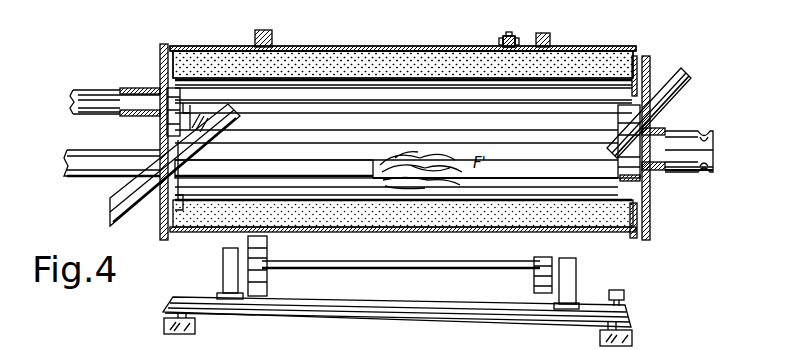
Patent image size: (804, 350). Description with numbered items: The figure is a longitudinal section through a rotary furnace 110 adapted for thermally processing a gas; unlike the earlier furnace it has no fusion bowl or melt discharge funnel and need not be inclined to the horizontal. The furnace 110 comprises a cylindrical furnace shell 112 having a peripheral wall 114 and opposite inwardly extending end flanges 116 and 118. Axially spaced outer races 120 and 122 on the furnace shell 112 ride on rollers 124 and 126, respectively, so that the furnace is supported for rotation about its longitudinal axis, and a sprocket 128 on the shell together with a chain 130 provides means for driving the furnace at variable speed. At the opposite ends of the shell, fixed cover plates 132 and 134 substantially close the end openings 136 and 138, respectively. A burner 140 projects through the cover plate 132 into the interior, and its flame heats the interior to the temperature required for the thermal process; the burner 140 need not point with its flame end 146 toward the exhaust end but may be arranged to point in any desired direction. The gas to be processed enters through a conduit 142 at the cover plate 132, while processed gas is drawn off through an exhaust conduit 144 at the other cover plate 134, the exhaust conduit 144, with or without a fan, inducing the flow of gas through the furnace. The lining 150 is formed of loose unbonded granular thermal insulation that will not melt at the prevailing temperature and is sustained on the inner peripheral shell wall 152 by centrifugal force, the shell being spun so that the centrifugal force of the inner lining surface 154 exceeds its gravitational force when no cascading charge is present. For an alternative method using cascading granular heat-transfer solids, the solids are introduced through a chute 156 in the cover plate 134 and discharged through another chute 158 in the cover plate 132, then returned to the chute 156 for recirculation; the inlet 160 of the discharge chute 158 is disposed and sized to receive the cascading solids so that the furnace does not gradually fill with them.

The furnace 110 is at (391, 41).
The cylindrical furnace shell 112 is at (460, 46).
The peripheral wall 114 is at (300, 47).
The end flange 116 is at (166, 62).
The end flange 118 is at (646, 74).
The outer race 120 is at (264, 30).
The outer race 122 is at (552, 44).
The roller 124 is at (268, 282).
The roller 126 is at (535, 290).
The sprocket 128 is at (517, 46).
The chain 130 is at (506, 34).
The cover plate 132 is at (160, 68).
The cover plate 134 is at (652, 218).
The end opening 136 is at (176, 200).
The end opening 138 is at (648, 208).
The burner 140 is at (273, 160).
The conduit 142 is at (115, 114).
The exhaust conduit 144 is at (682, 140).
The flame end 146 is at (386, 158).
The lining 150 is at (336, 61).
The inner peripheral shell wall 152 is at (383, 55).
The inner lining surface 154 is at (512, 204).
The chute 156 is at (686, 86).
The discharge chute 158 is at (175, 148).
The inlet 160 is at (218, 107).